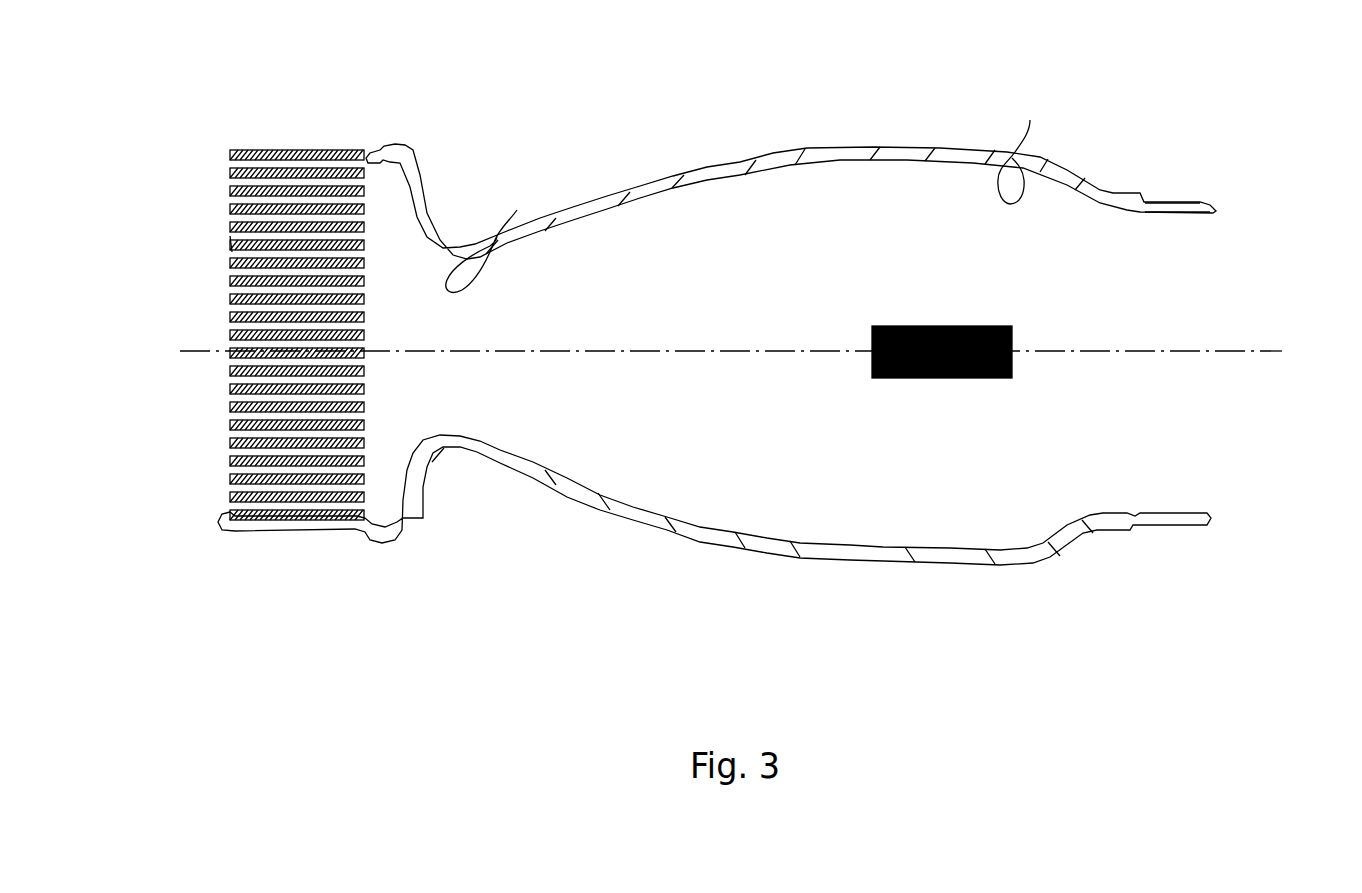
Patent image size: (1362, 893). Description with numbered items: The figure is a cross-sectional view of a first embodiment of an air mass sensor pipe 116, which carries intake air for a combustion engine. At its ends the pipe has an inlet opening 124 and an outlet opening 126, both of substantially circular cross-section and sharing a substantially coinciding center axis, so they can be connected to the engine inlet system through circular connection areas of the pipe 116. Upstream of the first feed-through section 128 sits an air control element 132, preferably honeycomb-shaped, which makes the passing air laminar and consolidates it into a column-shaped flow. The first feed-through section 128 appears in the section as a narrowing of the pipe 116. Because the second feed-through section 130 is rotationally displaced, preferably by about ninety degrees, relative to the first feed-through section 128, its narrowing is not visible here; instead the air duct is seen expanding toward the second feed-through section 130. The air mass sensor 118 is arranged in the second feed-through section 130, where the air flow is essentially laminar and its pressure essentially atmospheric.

The air mass sensor pipe 116 is at (650, 186).
The air mass sensor 118 is at (992, 326).
The inlet opening 124 is at (235, 199).
The outlet opening 126 is at (1200, 216).
The first feed-through section 128 is at (504, 231).
The second feed-through section 130 is at (1022, 141).
The air control element 132 is at (231, 239).